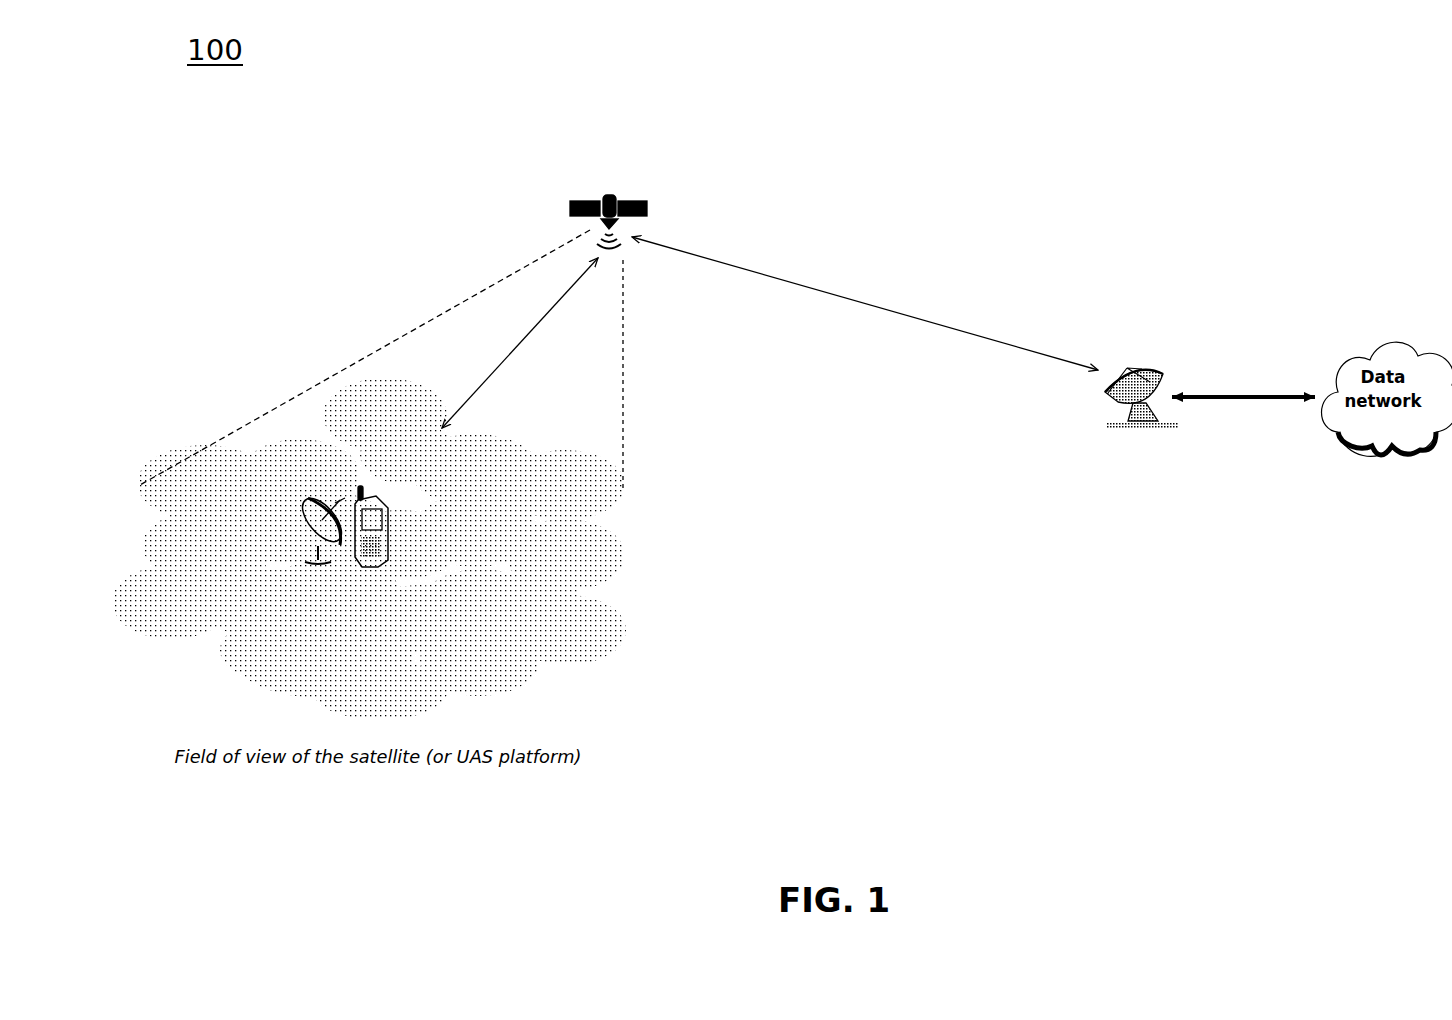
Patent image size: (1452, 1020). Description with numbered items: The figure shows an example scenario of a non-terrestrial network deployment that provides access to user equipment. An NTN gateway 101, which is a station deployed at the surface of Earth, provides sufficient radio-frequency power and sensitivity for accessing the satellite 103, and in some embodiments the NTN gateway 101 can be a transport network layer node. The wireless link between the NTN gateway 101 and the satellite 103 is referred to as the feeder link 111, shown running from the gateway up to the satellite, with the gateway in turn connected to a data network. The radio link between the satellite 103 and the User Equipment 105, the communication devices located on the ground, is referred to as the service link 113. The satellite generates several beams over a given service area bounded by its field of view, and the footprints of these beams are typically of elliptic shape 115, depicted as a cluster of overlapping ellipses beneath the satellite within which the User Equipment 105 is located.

The NTN gateway 101 is at (1146, 440).
The satellite 103 is at (602, 186).
The User Equipment 105 is at (345, 576).
The feeder link 111 is at (865, 310).
The service link 113 is at (520, 343).
The elliptic shape 115 is at (645, 655).